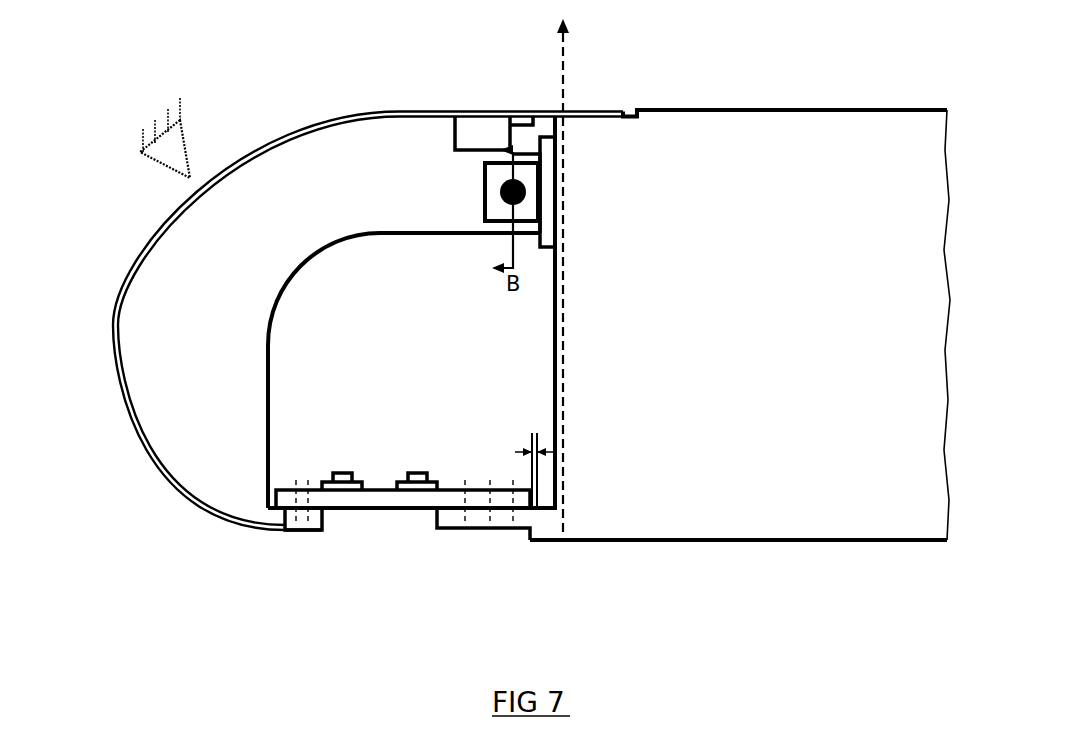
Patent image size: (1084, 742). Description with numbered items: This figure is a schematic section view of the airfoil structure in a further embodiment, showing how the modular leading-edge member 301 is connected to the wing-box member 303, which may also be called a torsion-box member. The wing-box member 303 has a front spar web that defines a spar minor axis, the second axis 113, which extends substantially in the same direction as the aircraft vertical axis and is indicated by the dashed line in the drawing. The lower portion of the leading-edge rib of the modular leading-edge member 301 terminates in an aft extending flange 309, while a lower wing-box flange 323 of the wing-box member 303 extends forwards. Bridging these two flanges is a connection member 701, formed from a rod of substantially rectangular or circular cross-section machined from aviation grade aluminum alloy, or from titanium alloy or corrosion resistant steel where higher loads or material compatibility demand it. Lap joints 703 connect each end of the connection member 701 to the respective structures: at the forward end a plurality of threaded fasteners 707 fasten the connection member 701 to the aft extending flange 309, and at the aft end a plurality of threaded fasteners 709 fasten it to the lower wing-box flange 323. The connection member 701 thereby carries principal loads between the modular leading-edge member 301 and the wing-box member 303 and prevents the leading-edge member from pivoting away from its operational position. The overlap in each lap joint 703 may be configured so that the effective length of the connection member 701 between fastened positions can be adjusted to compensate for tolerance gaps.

The modular leading-edge member 301 is at (178, 278).
The wing-box member 303 is at (663, 162).
The second axis 113 is at (563, 380).
The threaded fasteners 707 is at (310, 485).
The connection member 701 is at (392, 457).
The threaded fasteners 709 is at (467, 483).
The lap joints 703 is at (436, 570).
The lower wing-box flange 323 is at (453, 520).
The aft extending flange 309 is at (297, 521).